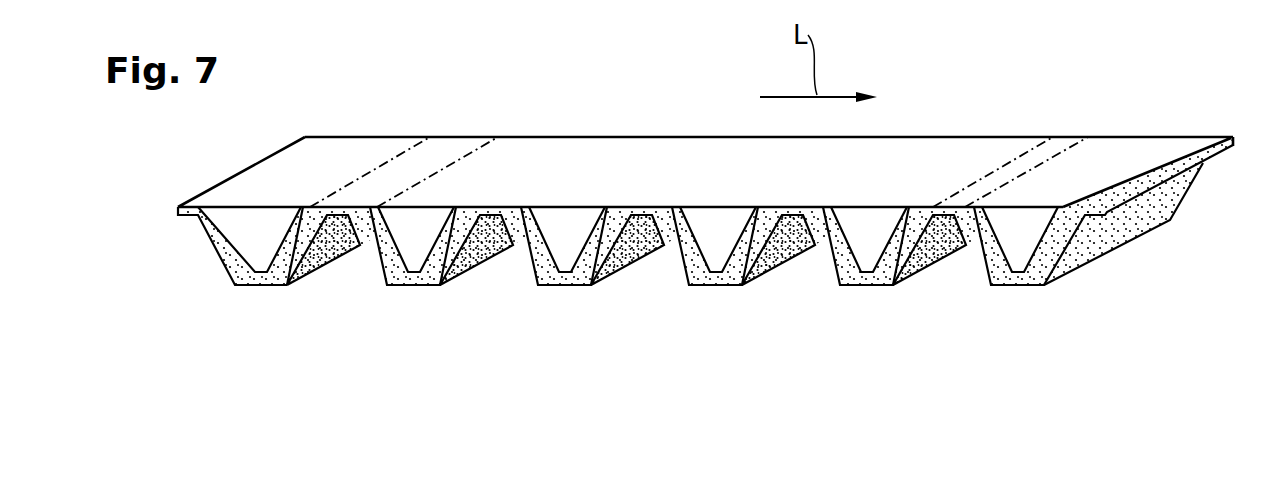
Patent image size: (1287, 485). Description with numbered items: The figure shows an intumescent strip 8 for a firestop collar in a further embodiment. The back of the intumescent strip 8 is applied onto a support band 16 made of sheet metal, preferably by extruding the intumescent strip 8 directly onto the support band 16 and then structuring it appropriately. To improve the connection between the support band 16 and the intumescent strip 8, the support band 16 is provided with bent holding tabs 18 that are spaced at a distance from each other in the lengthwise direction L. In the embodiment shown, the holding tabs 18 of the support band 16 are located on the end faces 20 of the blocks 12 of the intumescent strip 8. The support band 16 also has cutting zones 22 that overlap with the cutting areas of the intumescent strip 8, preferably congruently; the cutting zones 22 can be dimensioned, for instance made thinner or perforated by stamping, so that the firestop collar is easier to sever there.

The intumescent strip 8 is at (699, 221).
The blocks 12 is at (699, 252).
The support band 16 is at (622, 162).
The holding tabs 18 is at (570, 230).
The end faces 20 is at (226, 244).
The cutting zones 22 is at (416, 171).